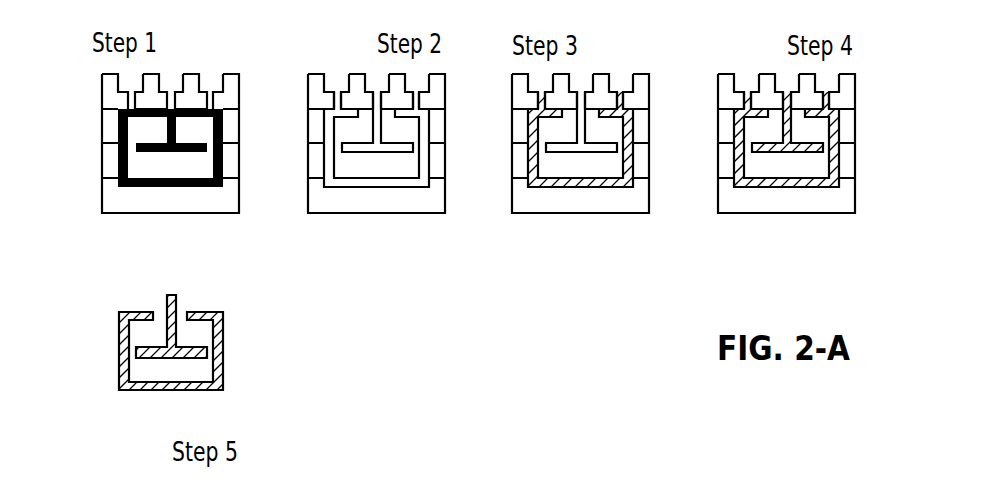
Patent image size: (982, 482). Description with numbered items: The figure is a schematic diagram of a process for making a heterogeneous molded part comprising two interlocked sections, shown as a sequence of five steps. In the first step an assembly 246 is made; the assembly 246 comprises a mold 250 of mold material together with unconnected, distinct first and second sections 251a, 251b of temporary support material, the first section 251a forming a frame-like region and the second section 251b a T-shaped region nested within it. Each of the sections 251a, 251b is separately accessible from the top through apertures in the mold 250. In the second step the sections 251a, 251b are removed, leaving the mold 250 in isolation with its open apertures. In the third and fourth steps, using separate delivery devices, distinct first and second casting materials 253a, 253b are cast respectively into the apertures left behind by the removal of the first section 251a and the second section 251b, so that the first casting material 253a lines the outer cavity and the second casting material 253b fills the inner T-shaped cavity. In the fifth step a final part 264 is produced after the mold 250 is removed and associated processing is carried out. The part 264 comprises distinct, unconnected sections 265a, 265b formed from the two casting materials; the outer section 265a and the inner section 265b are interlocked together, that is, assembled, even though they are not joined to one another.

The assembly 246 is at (161, 179).
The mold 250 is at (242, 92).
The first section of temporary support material 251a is at (188, 187).
The second section of temporary support material 251b is at (153, 152).
The first casting material 253a is at (562, 188).
The second casting material 253b is at (770, 155).
The final part 264 is at (176, 380).
The first section of final part 265a is at (223, 373).
The second section of final part 265b is at (188, 358).